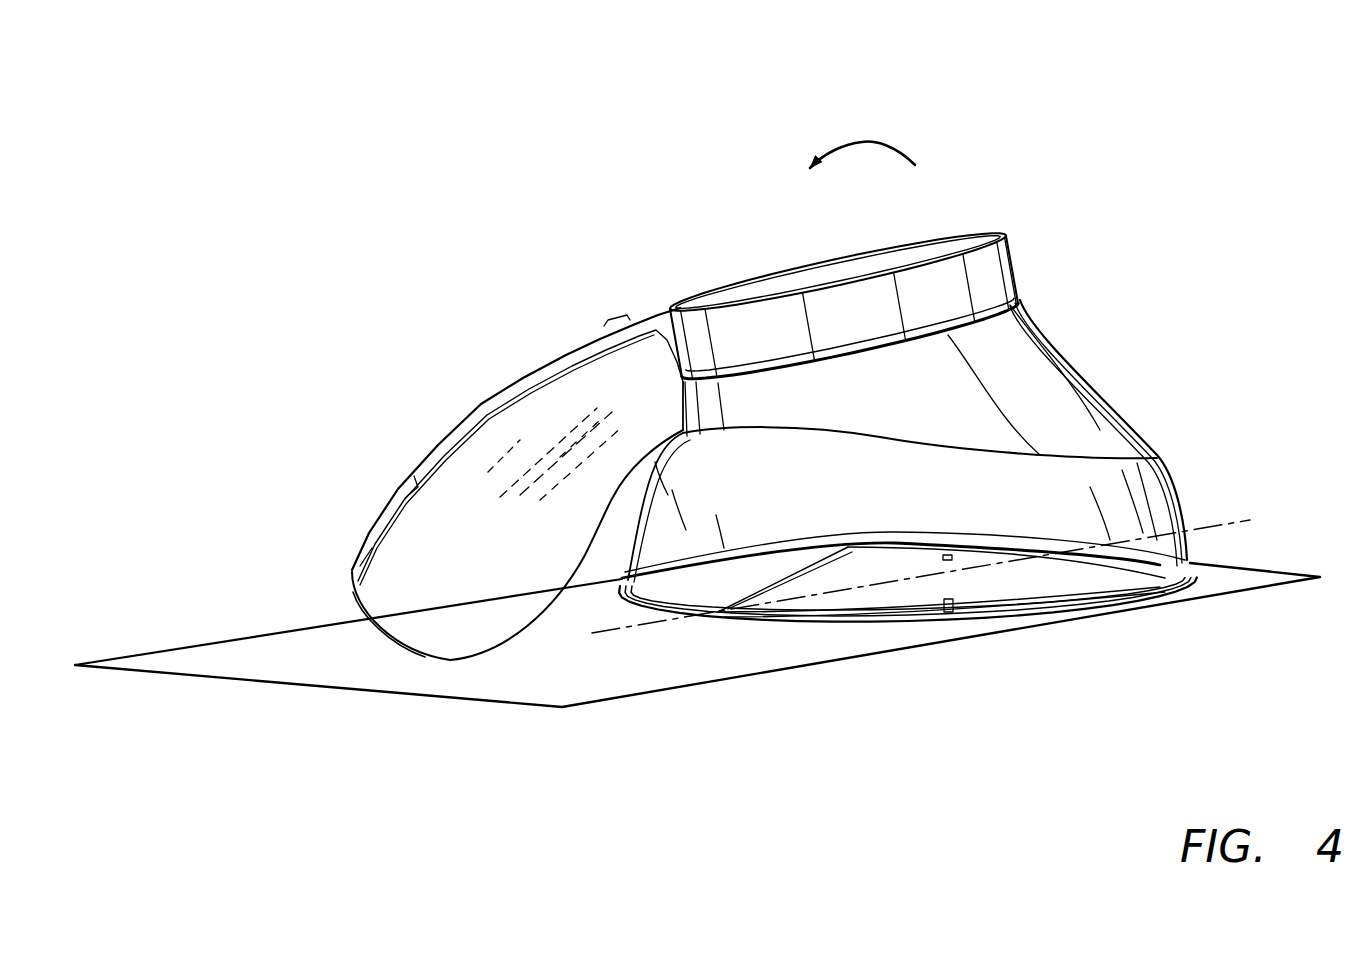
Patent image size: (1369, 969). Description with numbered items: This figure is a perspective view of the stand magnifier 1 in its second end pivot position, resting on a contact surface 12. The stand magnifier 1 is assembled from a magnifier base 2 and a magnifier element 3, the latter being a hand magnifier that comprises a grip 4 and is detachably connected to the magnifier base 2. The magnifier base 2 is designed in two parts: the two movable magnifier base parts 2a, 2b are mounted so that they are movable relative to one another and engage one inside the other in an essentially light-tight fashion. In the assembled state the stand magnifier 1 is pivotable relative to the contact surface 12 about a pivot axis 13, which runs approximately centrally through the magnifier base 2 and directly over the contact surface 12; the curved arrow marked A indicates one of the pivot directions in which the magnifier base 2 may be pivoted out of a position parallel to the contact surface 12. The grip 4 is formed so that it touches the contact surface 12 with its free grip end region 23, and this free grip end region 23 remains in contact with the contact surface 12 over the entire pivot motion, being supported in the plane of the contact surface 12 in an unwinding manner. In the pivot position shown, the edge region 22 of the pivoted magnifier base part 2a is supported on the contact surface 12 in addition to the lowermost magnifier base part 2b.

The stand magnifier 1 is at (724, 79).
The magnifier base 2 is at (1165, 390).
The magnifier base part 2a is at (1078, 388).
The magnifier base part 2b is at (1140, 483).
The magnifier element 3 is at (545, 338).
The grip 4 is at (478, 402).
The contact surface 12 is at (232, 668).
The pivot axis 13 is at (1195, 527).
The edge region 22 is at (656, 592).
The free grip end region 23 is at (420, 657).
The pivot direction A is at (862, 142).